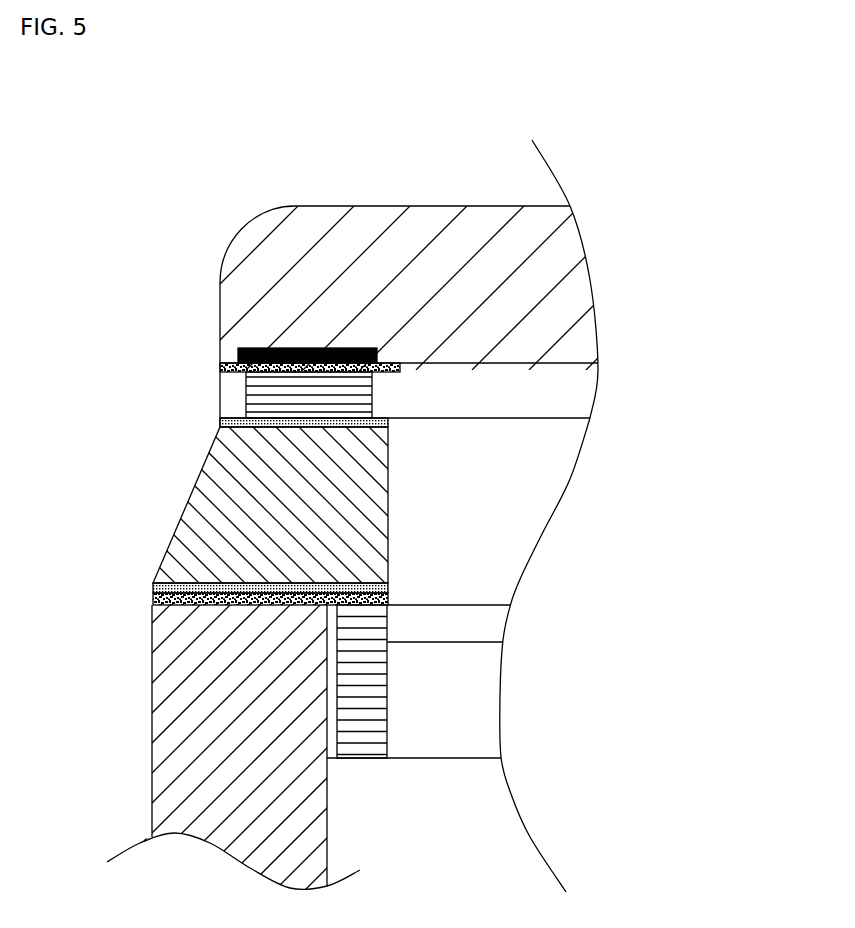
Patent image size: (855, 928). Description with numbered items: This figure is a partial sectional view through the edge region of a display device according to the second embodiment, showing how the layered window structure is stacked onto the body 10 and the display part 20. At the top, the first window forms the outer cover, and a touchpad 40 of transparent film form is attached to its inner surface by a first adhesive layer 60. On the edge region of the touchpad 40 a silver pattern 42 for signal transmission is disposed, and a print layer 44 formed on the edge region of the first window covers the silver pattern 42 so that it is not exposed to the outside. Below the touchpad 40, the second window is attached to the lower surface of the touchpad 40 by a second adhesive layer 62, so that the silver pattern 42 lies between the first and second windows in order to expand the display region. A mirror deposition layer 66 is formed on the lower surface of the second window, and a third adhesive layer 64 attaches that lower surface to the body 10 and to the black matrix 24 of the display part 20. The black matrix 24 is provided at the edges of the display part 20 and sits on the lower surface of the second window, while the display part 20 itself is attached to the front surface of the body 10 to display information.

The body 10 is at (172, 702).
The display part 20 is at (467, 717).
The black matrix 24 is at (352, 742).
The touchpad 40 is at (580, 397).
The silver pattern 42 is at (243, 392).
The print layer 44 is at (325, 347).
The first adhesive layer 60 is at (220, 365).
The second adhesive layer 62 is at (220, 423).
The third adhesive layer 64 is at (153, 597).
The mirror deposition layer 66 is at (207, 585).